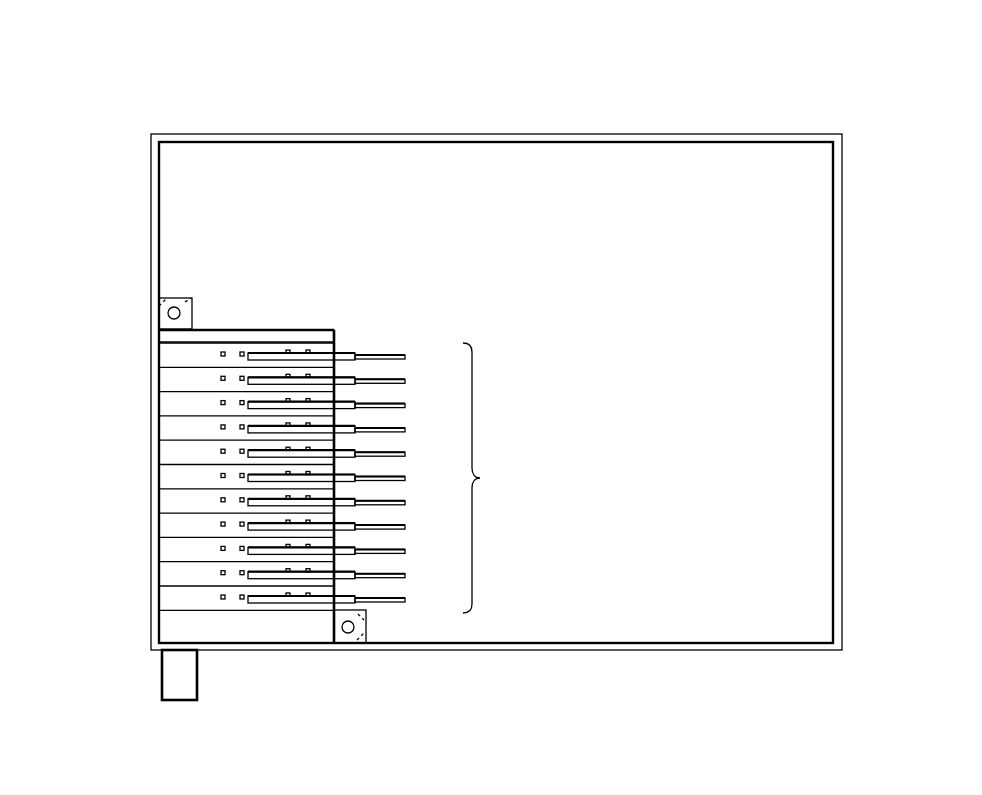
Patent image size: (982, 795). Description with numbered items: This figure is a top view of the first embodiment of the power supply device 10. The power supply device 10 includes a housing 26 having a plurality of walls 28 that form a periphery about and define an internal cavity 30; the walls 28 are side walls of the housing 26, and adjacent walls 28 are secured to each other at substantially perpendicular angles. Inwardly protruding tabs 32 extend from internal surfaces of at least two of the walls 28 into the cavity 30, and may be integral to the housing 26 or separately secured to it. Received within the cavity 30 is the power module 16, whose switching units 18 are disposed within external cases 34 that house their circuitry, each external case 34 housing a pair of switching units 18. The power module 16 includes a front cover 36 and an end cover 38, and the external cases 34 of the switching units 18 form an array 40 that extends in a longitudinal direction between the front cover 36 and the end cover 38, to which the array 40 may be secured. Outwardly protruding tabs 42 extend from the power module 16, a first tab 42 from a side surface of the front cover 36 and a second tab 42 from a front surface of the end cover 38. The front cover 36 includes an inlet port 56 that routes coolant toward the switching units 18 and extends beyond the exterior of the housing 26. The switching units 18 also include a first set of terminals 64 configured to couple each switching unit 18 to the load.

The power supply device 10 is at (228, 77).
The power module 16 is at (352, 330).
The switching units 18 is at (175, 525).
The housing 26 is at (758, 133).
The walls 28 is at (400, 134).
The internal cavity 30 is at (609, 402).
The inwardly protruding tabs 32 is at (163, 297).
The external cases 34 is at (177, 476).
The front cover 36 is at (265, 483).
The end cover 38 is at (283, 328).
The array 40 is at (374, 478).
The outwardly protruding tabs 42 is at (185, 297).
The inlet port 56 is at (160, 676).
The first set of terminals 64 is at (400, 407).